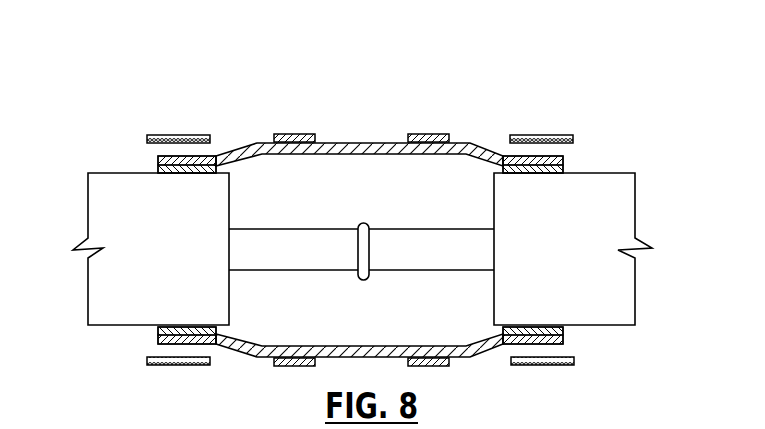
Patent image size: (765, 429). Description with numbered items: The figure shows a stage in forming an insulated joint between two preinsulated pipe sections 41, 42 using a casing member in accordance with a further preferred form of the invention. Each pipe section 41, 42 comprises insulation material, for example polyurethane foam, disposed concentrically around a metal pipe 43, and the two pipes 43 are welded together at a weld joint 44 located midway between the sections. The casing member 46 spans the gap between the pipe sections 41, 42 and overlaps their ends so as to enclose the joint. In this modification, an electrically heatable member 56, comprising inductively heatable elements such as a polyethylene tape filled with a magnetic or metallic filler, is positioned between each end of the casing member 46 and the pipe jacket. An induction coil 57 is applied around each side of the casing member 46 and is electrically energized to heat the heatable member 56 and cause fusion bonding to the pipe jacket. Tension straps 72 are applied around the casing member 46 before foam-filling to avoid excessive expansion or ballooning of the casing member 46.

The preinsulated pipe section 41 is at (101, 173).
The preinsulated pipe section 42 is at (613, 173).
The pipe 43 is at (305, 238).
The weld joint 44 is at (363, 224).
The casing member 46 is at (358, 141).
The electrically heatable member 56 is at (155, 170).
The induction coil 57 is at (189, 133).
The tension strap 72 is at (297, 133).